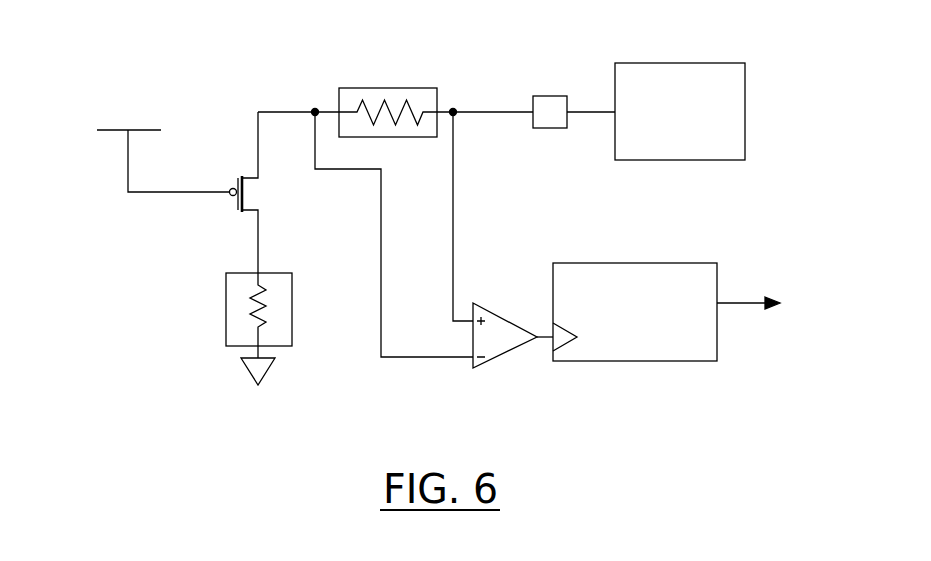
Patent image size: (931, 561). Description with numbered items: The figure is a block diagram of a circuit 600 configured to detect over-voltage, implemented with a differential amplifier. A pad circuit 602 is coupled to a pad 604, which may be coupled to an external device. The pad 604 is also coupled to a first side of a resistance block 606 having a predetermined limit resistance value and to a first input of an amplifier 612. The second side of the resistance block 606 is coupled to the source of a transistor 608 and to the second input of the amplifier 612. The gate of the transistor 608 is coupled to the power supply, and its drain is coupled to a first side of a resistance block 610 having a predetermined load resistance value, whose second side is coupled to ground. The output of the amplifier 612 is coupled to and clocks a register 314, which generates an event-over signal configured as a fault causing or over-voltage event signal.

The circuit 600 is at (101, 30).
The pad circuit 602 is at (681, 63).
The pad 604 is at (548, 128).
The resistance block 606 is at (386, 137).
The transistor 608 is at (282, 178).
The resistance block 610 is at (292, 311).
The amplifier 612 is at (503, 356).
The register 314 is at (618, 263).